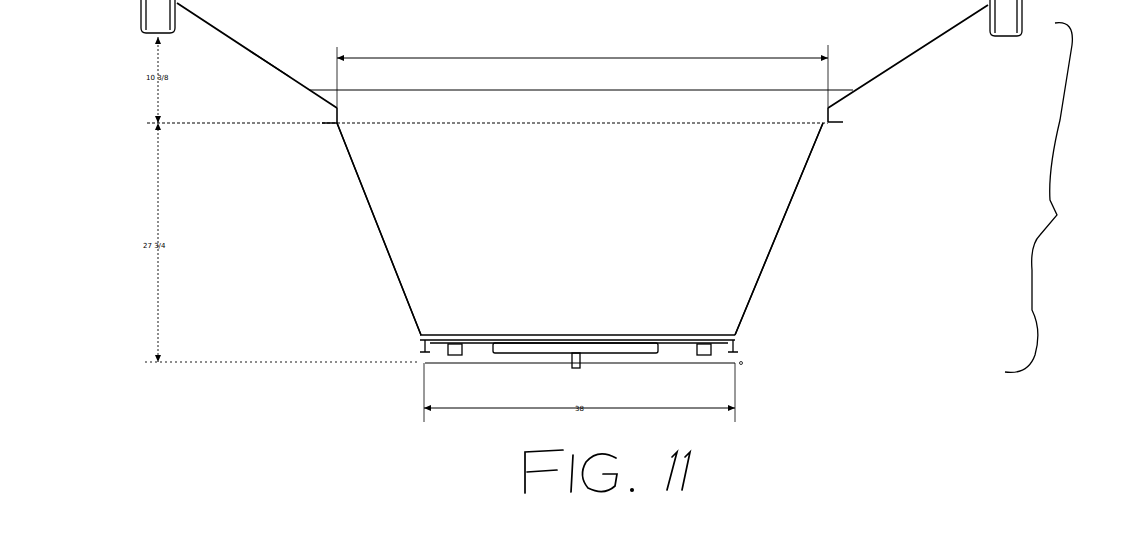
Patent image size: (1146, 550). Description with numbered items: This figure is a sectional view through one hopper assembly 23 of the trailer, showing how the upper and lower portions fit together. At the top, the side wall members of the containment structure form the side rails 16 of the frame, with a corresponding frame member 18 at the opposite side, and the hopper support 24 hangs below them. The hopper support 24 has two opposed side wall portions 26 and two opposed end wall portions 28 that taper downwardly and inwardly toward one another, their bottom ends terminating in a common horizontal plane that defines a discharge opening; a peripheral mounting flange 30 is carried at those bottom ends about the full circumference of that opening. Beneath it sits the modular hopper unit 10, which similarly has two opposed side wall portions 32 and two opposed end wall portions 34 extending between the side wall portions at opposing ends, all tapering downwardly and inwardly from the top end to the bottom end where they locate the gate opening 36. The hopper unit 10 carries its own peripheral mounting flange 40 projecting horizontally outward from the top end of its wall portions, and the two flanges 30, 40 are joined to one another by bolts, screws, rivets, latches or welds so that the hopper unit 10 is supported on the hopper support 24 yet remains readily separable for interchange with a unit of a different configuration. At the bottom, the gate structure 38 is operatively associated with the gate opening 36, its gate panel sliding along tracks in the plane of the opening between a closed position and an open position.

The modular hopper unit 10 is at (258, 201).
The side rail 16 is at (118, 0).
The support post 18 is at (1044, 18).
The hopper assembly 23 is at (1056, 198).
The hopper support 24 is at (220, 45).
The side wall portion 26 is at (250, 52).
The end wall portion 28 is at (545, 37).
The peripheral mounting flange 30 is at (330, 120).
The side wall portion 32 is at (372, 217).
The end wall portion 34 is at (600, 211).
The gate opening 36 is at (646, 317).
The gate structure 38 is at (622, 348).
The peripheral mounting flange 40 is at (333, 125).